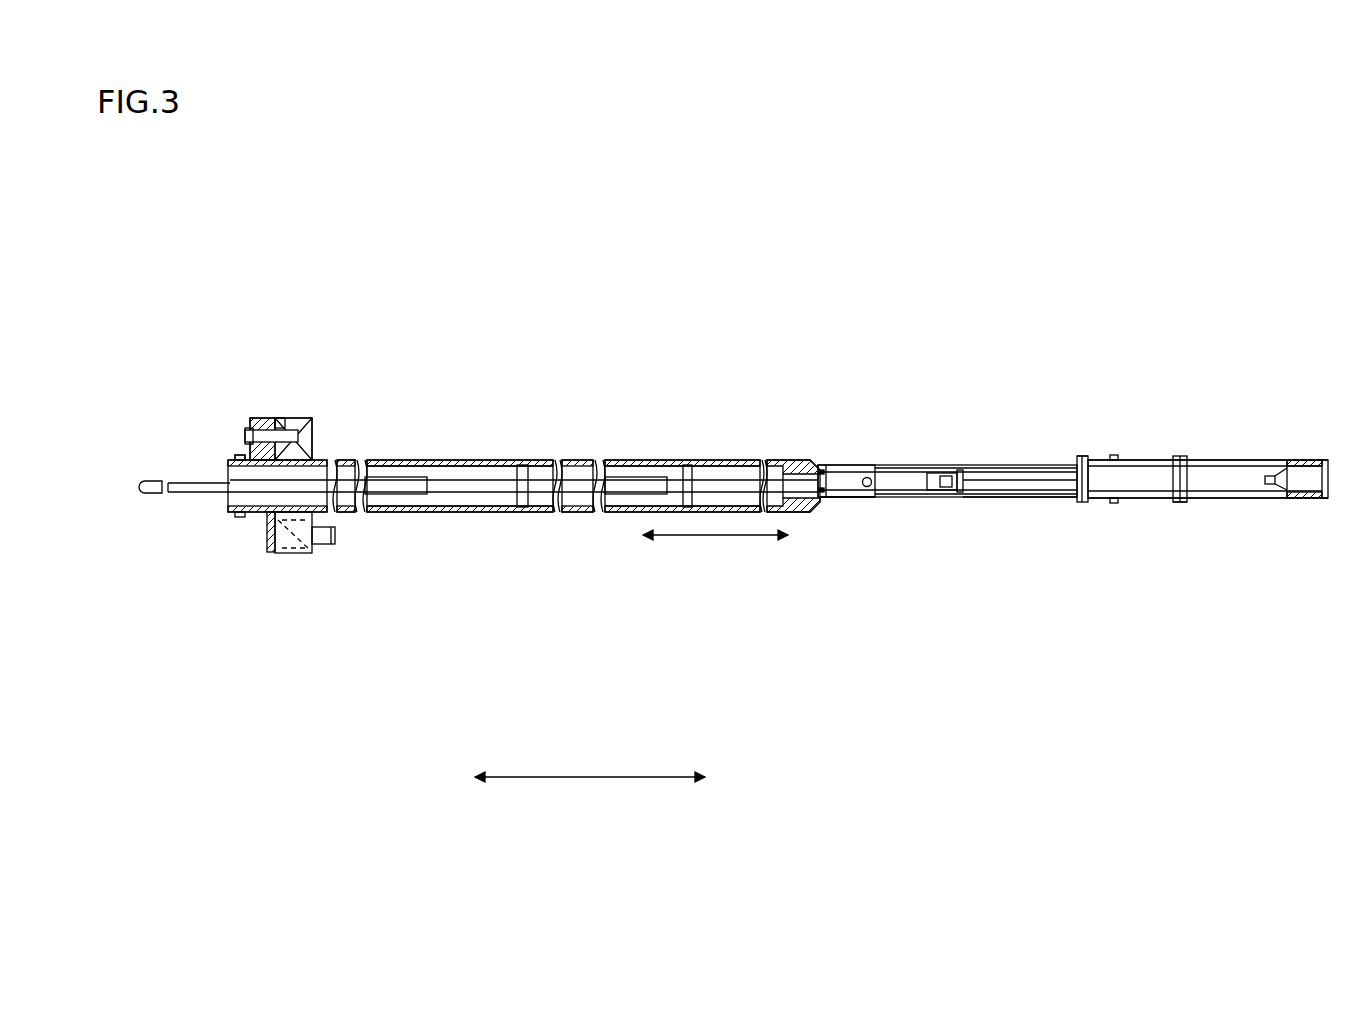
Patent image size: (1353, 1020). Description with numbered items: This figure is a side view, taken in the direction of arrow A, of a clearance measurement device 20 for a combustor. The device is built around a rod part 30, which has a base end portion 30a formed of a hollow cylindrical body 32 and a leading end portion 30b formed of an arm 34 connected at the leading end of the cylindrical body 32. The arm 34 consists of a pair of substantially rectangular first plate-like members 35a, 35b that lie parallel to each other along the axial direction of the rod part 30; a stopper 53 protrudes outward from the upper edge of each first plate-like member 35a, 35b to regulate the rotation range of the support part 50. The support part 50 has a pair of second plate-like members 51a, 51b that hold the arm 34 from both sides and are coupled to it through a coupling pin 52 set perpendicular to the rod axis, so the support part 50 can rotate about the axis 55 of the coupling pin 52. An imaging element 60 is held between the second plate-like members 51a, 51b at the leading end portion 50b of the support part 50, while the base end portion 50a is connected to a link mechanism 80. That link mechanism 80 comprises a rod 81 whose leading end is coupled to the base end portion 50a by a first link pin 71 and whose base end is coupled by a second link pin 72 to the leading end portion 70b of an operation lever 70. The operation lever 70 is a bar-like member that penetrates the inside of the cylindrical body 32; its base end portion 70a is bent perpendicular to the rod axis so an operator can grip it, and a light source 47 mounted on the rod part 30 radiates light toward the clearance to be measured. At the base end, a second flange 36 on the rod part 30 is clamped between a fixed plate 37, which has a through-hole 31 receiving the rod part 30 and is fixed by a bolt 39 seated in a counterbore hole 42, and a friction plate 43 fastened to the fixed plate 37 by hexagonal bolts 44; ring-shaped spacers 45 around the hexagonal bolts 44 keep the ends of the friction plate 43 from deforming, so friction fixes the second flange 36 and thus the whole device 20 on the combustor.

The clearance measurement device 20 is at (523, 300).
The rod part 30 is at (628, 440).
The base end portion of the rod part 30a is at (374, 459).
The leading end portion of the rod part 30b is at (1052, 461).
The through-hole 31 is at (306, 456).
The cylindrical body 32 is at (445, 459).
The arm 34 is at (916, 463).
The first plate-like member 35a is at (852, 465).
The first plate-like member 35b is at (843, 498).
The second flange 36 is at (272, 418).
The fixed plate 37 is at (300, 418).
The bolt 39 is at (325, 536).
The counterbore hole 42 is at (290, 550).
The friction plate 43 is at (260, 418).
The hexagonal bolt 44 is at (245, 435).
The spacer 45 is at (262, 456).
The light source 47 is at (868, 488).
The support part 50 is at (1165, 402).
The base end portion of the support part 50a is at (1081, 503).
The leading end portion of the support part 50b is at (1276, 502).
The second plate-like member 51a is at (1215, 460).
The second plate-like member 51b is at (1211, 499).
The coupling pin 52 is at (1180, 503).
The stopper 53 is at (1113, 455).
The axis 55 is at (1180, 457).
The imaging element 60 is at (1300, 486).
The operation lever 70 is at (541, 482).
The base end portion of the operation lever 70a is at (138, 497).
The leading end portion of the operation lever 70b is at (931, 490).
The first link pin 71 is at (1080, 465).
The second link pin 72 is at (956, 475).
The link mechanism 80 is at (1024, 499).
The rod 81 is at (1013, 490).